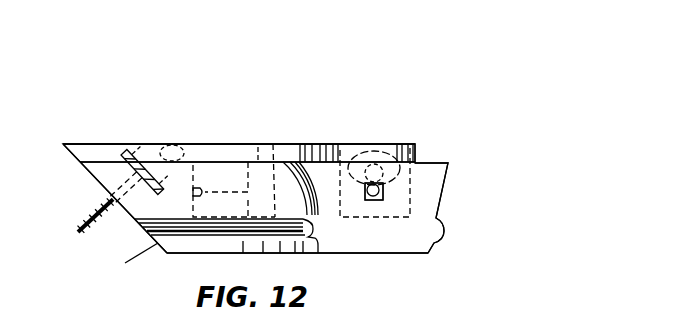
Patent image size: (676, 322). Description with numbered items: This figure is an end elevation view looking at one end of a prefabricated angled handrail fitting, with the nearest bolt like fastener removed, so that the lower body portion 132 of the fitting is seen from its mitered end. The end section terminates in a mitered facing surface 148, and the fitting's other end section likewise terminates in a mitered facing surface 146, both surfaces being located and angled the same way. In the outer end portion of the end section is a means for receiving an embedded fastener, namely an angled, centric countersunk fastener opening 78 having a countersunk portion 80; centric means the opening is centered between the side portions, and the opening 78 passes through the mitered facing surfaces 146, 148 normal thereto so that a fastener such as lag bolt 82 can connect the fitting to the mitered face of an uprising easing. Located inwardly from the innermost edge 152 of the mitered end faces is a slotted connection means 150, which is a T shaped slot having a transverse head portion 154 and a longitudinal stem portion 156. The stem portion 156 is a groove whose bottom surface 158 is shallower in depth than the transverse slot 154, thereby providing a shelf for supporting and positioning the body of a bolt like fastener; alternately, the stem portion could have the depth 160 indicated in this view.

The lower body portion 132 is at (208, 76).
The countersunk portion 80 is at (170, 143).
The longitudinal stem portion 156 is at (218, 143).
The transverse head portion 154 is at (263, 143).
The slotted connection means 150 is at (282, 147).
The mitered facing surface 148 is at (86, 167).
The lag bolt 82 is at (90, 211).
The bottom surface 158 is at (192, 193).
The depth 160 is at (204, 235).
The innermost edge 152 is at (167, 254).
The countersunk fastener opening 78 is at (375, 201).
The mitered facing surface 146 is at (402, 240).